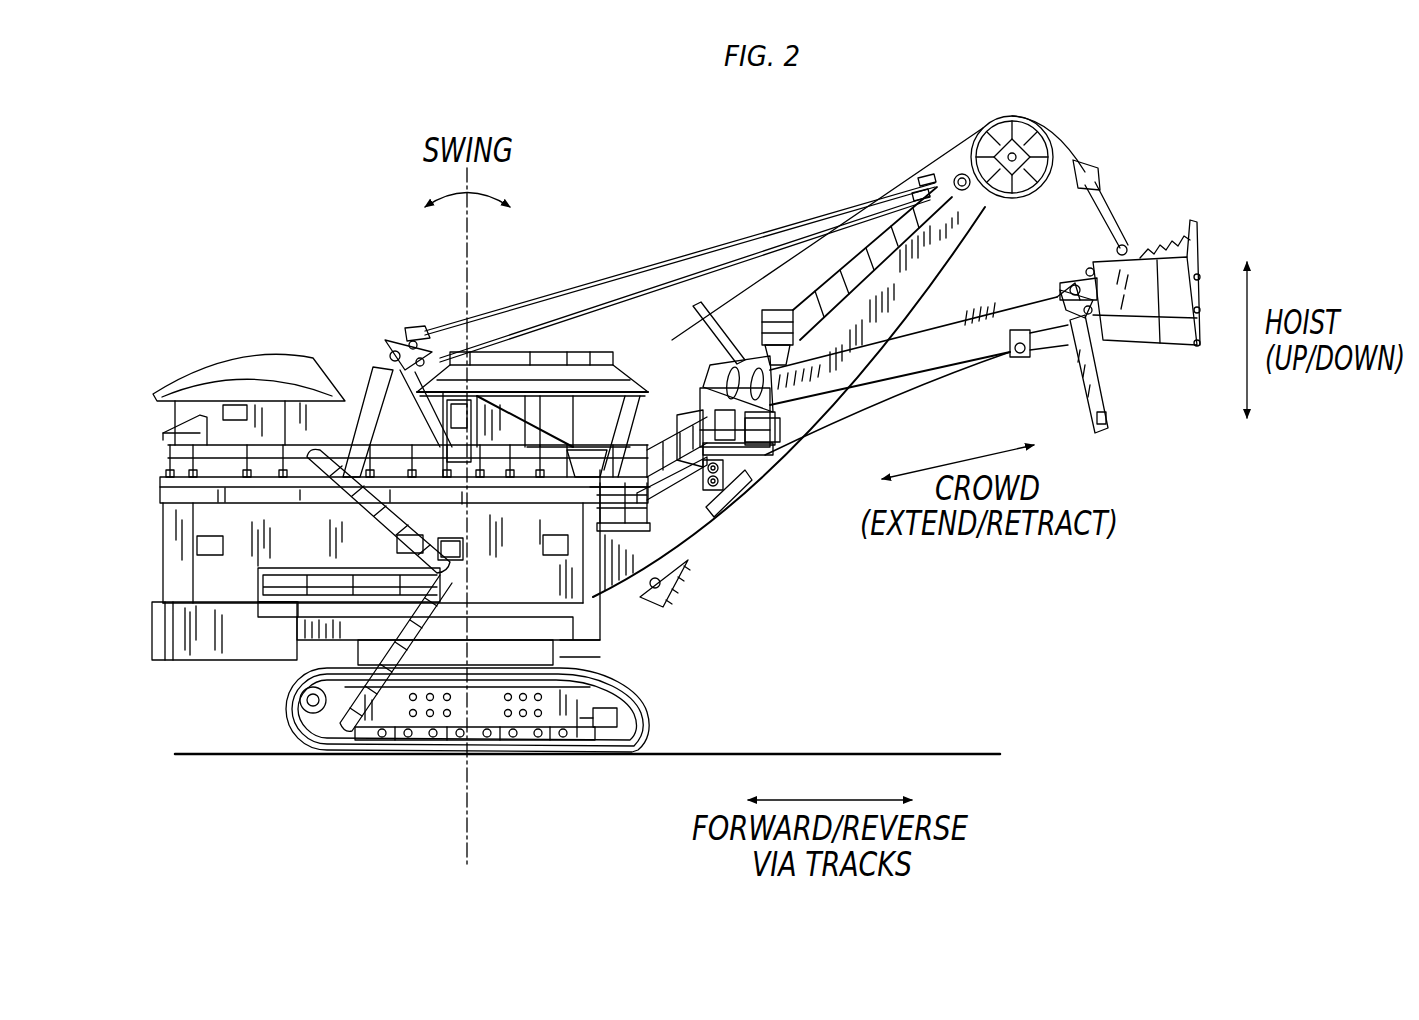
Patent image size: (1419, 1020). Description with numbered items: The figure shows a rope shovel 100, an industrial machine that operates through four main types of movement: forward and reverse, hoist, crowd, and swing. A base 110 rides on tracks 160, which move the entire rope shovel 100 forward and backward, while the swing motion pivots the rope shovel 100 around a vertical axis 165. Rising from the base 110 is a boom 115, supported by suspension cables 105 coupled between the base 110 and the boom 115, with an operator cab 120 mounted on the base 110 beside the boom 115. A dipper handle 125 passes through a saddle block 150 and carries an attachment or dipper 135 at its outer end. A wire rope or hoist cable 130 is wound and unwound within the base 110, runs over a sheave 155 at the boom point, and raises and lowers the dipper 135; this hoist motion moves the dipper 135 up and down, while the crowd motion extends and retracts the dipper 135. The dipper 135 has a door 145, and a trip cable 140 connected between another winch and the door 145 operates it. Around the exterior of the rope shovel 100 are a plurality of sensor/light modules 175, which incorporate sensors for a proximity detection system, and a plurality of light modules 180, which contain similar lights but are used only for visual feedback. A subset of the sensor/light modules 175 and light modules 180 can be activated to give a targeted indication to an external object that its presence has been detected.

The rope shovel 100 is at (212, 238).
The suspension cables 105 is at (580, 287).
The base 110 is at (217, 575).
The boom 115 is at (963, 218).
The operator cab 120 is at (592, 368).
The dipper handle 125 is at (942, 322).
The hoist cable 130 is at (943, 160).
The dipper 135 is at (1188, 222).
The trip cable 140 is at (866, 412).
The door 145 is at (1100, 393).
The saddle block 150 is at (716, 390).
The sheave 155 is at (1025, 125).
The tracks 160 is at (643, 713).
The axis 165 is at (460, 797).
The sensor/light modules 175 is at (197, 543).
The light modules 180 is at (240, 402).